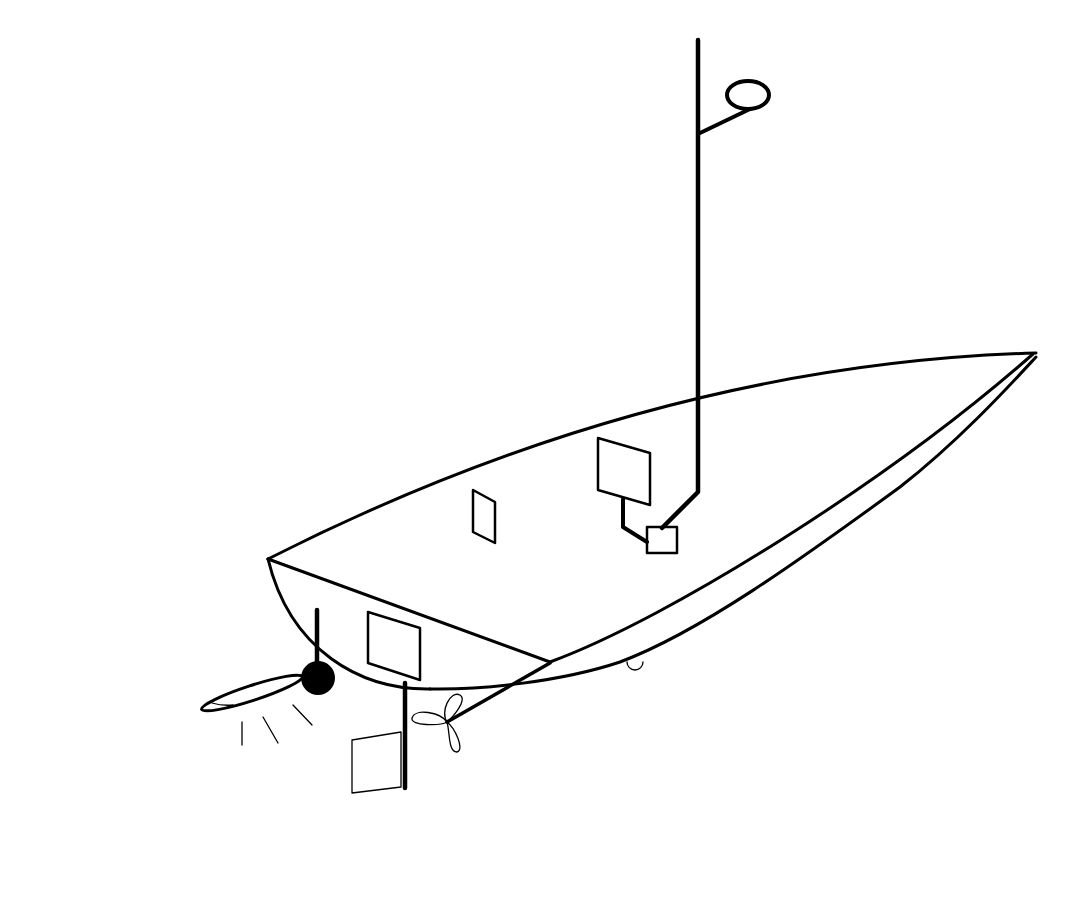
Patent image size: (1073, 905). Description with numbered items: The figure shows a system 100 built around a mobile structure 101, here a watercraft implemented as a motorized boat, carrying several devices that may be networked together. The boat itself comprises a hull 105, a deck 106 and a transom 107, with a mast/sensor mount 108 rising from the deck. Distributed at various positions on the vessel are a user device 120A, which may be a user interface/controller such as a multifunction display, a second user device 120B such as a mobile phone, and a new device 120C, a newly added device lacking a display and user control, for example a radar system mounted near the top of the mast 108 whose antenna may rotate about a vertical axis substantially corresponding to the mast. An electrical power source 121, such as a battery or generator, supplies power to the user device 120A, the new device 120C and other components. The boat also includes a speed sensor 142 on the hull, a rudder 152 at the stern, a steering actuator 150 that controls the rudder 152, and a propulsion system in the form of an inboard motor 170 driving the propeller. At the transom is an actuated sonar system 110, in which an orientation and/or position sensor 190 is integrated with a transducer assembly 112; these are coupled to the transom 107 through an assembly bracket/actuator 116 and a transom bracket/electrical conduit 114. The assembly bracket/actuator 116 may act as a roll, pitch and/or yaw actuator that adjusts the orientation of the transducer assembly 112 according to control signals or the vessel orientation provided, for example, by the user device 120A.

The system 100 is at (138, 90).
The mobile structure 101 is at (294, 517).
The hull 105 is at (763, 587).
The deck 106 is at (933, 422).
The transom 107 is at (300, 593).
The mast/sensor mount 108 is at (696, 83).
The actuated sonar system 110 is at (172, 628).
The transducer assembly 112 is at (190, 698).
The orientation and/or position sensor (OPS) 190 is at (207, 700).
The transom bracket/electrical conduit 114 is at (313, 630).
The assembly bracket/actuator 116 is at (303, 667).
The user device 120A is at (598, 463).
The user device 120B is at (473, 510).
The new device 120C is at (770, 93).
The electrical power source 121 is at (678, 527).
The speed sensor 142 is at (643, 657).
The steering actuator 150 is at (410, 657).
The rudder 152 is at (390, 770).
The inboard motor 170 is at (495, 723).